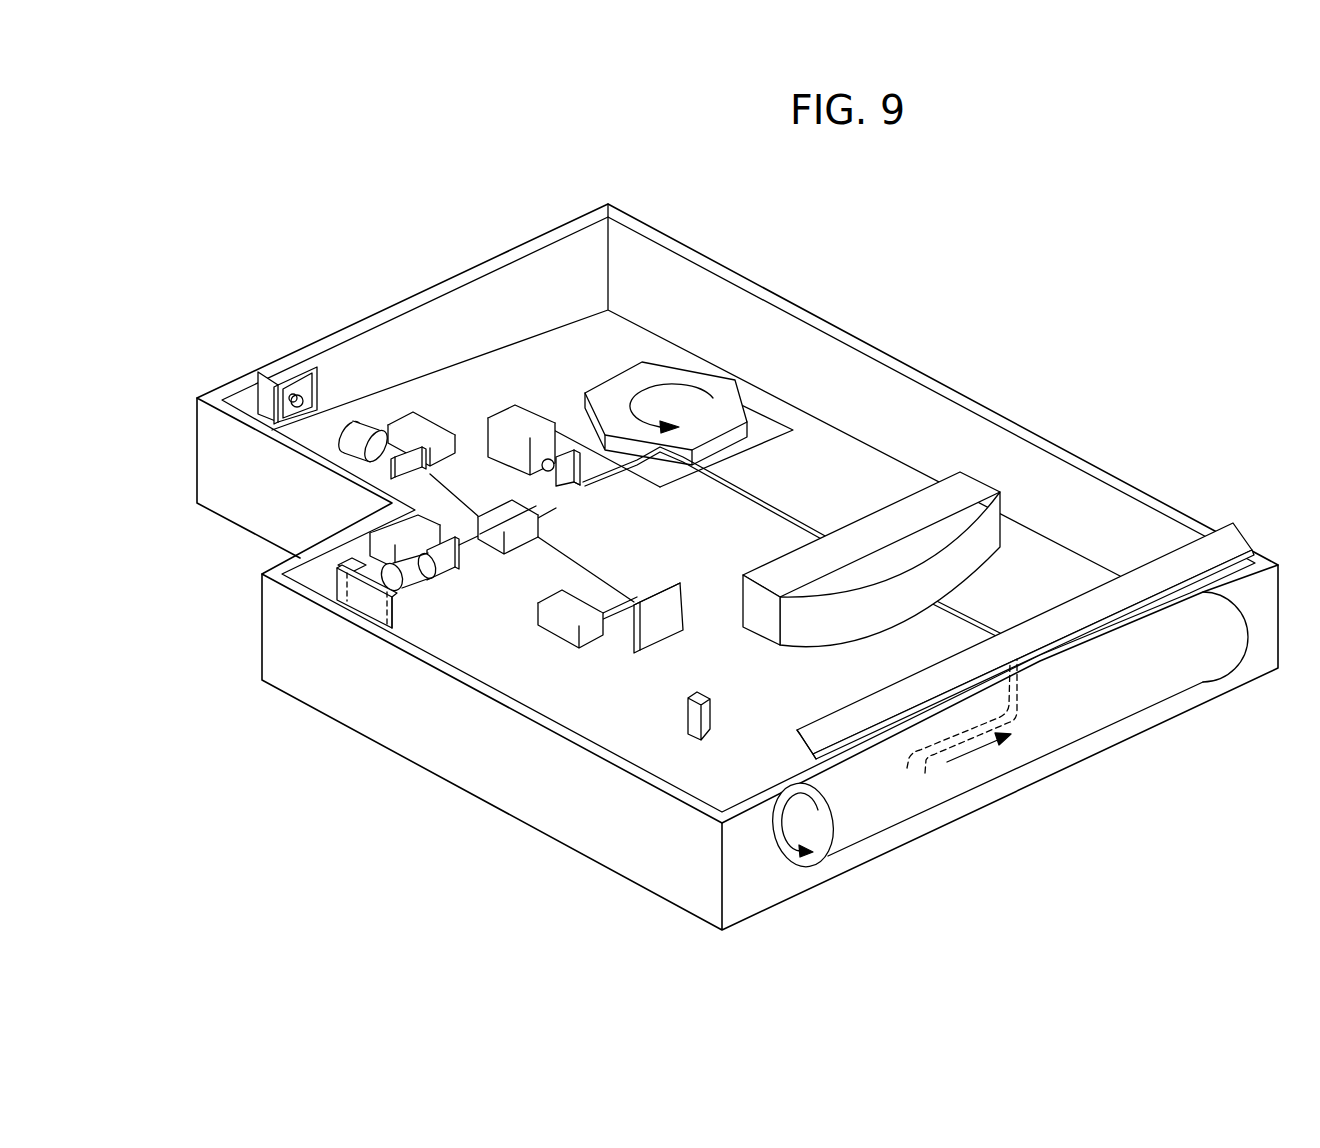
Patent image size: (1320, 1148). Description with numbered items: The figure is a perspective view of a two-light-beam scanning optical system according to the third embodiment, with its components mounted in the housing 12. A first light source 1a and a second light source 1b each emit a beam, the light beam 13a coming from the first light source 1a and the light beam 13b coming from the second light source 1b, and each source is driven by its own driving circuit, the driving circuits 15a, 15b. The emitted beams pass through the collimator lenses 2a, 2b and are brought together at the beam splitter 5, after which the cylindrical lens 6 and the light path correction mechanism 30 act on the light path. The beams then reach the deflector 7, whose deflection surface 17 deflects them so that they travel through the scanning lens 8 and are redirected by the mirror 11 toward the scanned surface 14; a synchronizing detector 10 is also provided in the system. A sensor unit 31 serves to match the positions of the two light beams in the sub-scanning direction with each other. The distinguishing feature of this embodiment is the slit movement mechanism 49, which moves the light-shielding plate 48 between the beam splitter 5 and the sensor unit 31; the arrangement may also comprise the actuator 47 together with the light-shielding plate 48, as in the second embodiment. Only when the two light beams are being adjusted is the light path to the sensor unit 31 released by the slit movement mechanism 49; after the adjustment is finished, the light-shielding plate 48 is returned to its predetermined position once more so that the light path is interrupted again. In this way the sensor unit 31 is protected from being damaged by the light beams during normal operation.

The first light source 1a is at (354, 568).
The second light source 1b is at (300, 382).
The collimator lens 2a is at (427, 575).
The collimator lens 2b is at (355, 428).
The beam splitter 5 is at (540, 518).
The cylindrical lens 6 is at (415, 468).
The deflector 7 is at (684, 400).
The scanning lens 8 is at (950, 497).
The synchronizing detector 10 is at (712, 712).
The mirror 11 is at (1157, 572).
The housing 12 is at (410, 737).
The light beam 13a is at (907, 770).
The light beam 13b is at (925, 773).
The scanned surface 14 is at (1130, 696).
The driving circuit 15a is at (336, 590).
The driving circuit 15b is at (266, 400).
The deflection surface 17 is at (678, 457).
The light path correction mechanism 30 is at (412, 422).
The sensor unit 31 is at (657, 628).
The actuator 47 is at (520, 422).
The light-shielding plate 48 is at (568, 462).
The slit movement mechanism 49 is at (550, 636).